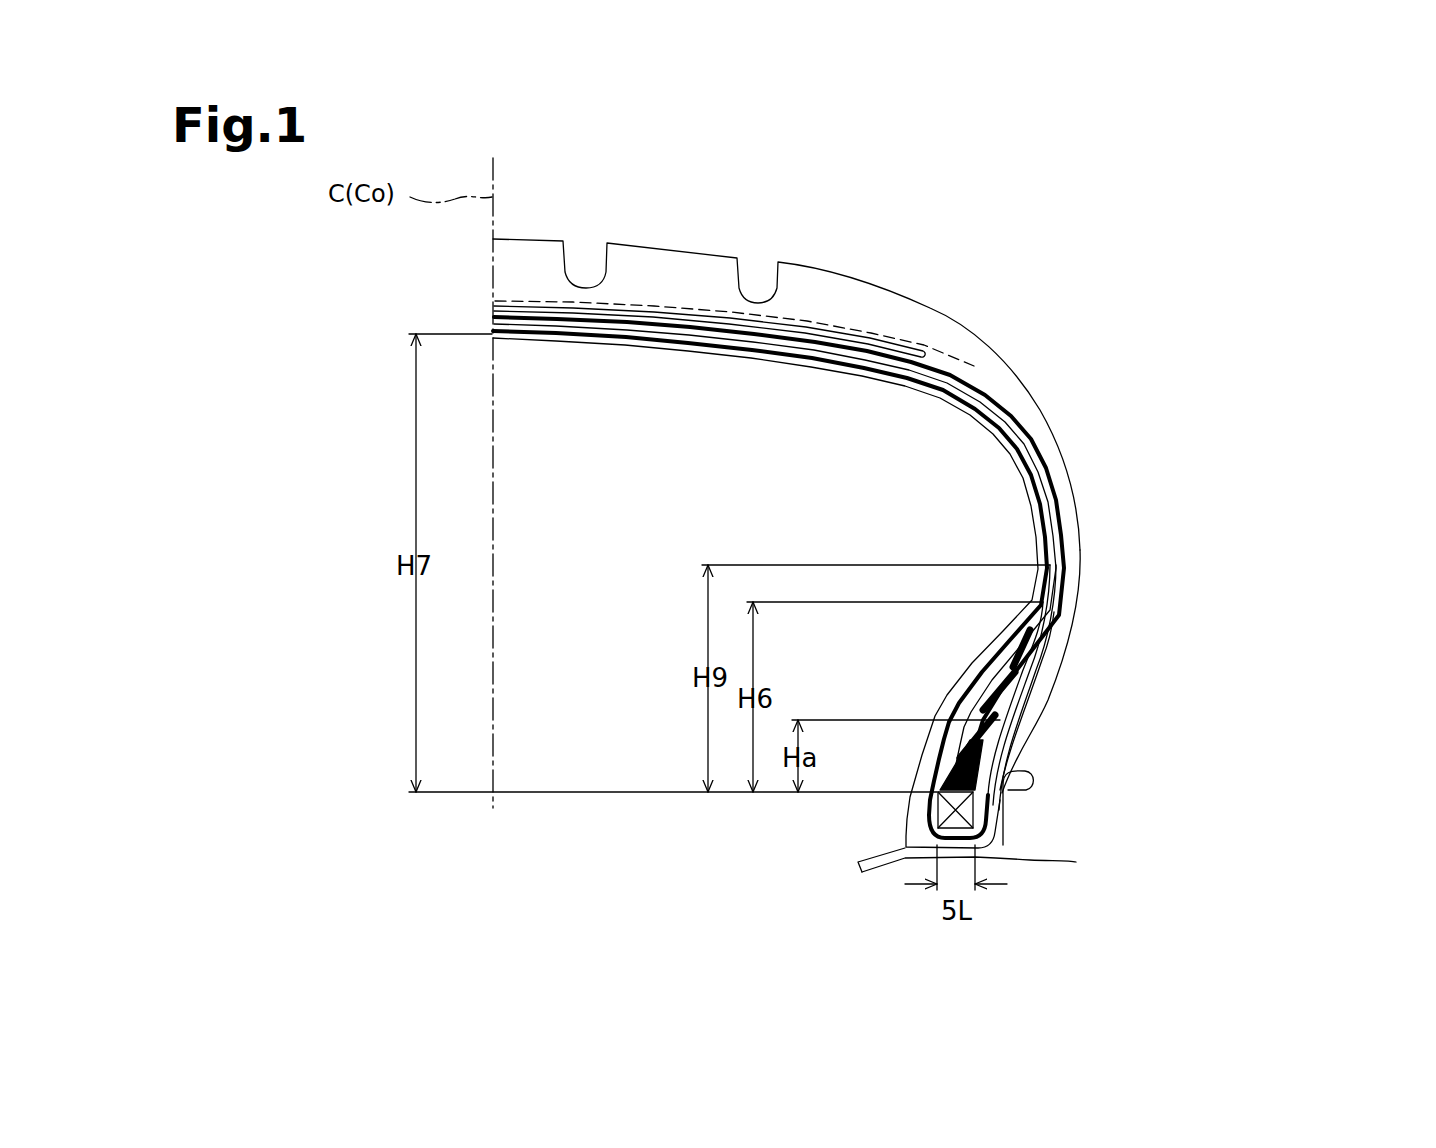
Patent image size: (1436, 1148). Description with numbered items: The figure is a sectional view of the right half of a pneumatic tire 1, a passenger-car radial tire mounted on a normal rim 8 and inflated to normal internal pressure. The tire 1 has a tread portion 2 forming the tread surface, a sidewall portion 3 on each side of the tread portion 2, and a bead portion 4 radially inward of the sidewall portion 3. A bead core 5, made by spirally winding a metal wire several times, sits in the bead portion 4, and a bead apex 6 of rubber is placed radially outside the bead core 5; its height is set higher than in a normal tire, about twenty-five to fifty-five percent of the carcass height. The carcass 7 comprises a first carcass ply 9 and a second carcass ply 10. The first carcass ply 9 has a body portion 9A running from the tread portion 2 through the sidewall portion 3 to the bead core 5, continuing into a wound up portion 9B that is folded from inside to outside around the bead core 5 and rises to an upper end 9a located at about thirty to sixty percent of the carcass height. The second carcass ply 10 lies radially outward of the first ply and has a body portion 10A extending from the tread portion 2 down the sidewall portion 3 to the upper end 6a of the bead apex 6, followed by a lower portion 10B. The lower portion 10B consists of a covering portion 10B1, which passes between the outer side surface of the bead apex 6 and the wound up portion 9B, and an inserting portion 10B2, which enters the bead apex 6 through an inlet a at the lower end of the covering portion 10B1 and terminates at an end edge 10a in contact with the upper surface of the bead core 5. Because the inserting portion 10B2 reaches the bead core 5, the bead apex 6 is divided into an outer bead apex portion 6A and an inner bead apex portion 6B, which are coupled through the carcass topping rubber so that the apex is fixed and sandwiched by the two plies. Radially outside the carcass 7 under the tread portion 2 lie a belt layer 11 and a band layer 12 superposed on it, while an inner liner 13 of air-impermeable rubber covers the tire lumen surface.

The pneumatic tire 1 is at (1088, 335).
The tread portion 2 is at (690, 242).
The sidewall portion 3 is at (1085, 418).
The bead portion 4 is at (1030, 767).
The bead core 5 is at (990, 810).
The bead apex 6 is at (1256, 723).
The outer bead apex portion 6A is at (1020, 766).
The inner bead apex portion 6B is at (1008, 760).
The upper end of the bead apex 6a is at (1042, 600).
The carcass 7 is at (1330, 477).
The rim 8 is at (976, 863).
The first carcass ply 9 is at (1283, 453).
The body portion 9A is at (1075, 545).
The wound up portion 9B is at (1052, 580).
The upper end of the wound up portion 9a is at (1058, 565).
The second carcass ply 10 is at (1275, 568).
The body portion 10A is at (1033, 600).
The lower portion 10B is at (1390, 703).
The covering portion 10B1 is at (1000, 667).
The inserting portion 10B2 is at (1003, 742).
The end edge 10a is at (940, 770).
The belt layer 11 is at (835, 333).
The band layer 12 is at (788, 323).
The inner liner 13 is at (1027, 497).
The inlet a is at (1000, 712).